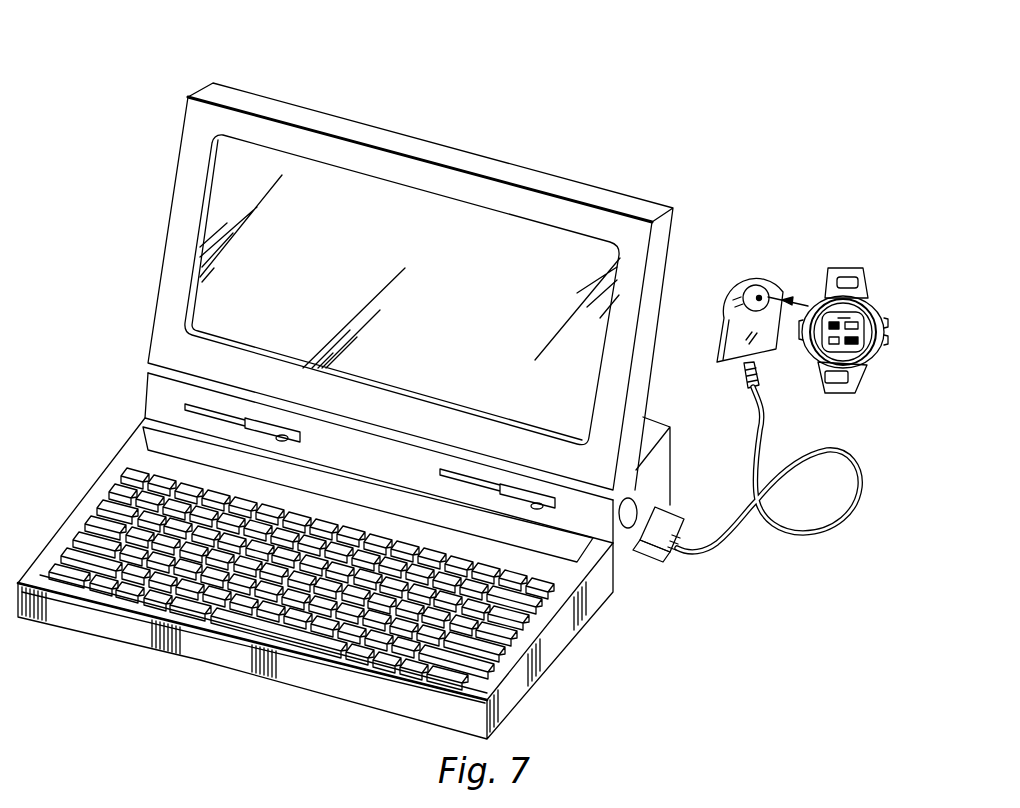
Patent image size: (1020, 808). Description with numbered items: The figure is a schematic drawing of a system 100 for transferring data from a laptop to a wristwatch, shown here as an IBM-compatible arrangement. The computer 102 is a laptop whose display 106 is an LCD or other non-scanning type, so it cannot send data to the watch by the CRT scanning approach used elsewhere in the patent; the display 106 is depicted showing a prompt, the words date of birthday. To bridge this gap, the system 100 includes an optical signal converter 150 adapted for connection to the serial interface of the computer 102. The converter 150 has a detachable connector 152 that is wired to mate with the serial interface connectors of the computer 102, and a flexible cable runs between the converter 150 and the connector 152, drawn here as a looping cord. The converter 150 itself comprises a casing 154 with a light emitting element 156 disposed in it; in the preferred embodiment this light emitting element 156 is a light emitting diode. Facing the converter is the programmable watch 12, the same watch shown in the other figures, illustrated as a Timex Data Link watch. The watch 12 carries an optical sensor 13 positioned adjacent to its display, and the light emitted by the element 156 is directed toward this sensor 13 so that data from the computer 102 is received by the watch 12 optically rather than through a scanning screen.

The system 100 is at (120, 280).
The computer 102 is at (510, 131).
The display 106 is at (313, 173).
The optical signal converter 150 is at (729, 268).
The detachable connector 152 is at (676, 506).
The casing 154 is at (717, 332).
The light emitting element 156 is at (762, 296).
The programmable watch 12 is at (858, 254).
The optical sensor 13 is at (868, 309).